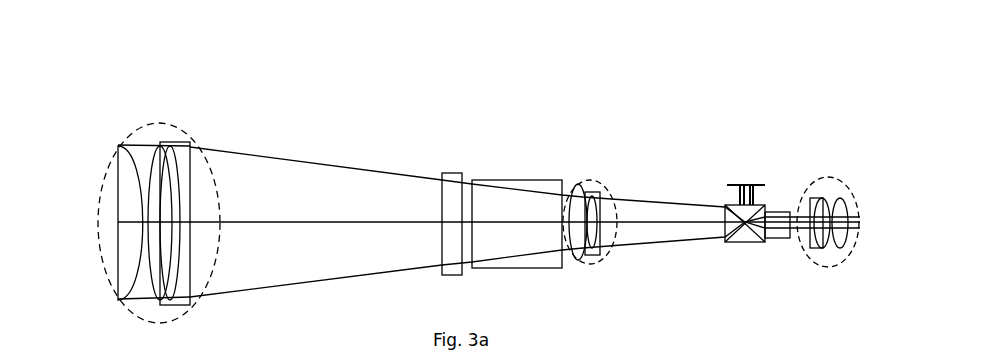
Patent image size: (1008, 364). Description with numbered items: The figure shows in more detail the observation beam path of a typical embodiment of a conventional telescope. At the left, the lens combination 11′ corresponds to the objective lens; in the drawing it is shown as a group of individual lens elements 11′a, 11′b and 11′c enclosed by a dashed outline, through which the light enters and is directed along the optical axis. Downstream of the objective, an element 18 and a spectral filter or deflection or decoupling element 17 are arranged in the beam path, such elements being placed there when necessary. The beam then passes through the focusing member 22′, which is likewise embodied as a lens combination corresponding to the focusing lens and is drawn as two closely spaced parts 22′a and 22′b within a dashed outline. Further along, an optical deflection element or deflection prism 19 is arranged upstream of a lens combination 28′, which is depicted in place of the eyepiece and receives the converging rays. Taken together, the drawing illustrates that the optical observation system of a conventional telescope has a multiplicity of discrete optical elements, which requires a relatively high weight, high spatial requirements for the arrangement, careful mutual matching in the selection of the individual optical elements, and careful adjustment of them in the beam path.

The lens combination 11′ is at (204, 127).
The first lens of objective group 11′a is at (127, 145).
The second lens of objective group 11′b is at (159, 146).
The third lens of objective group 11′c is at (177, 143).
The optical plate / filter 18 is at (457, 173).
The spectral filter or deflection or decoupling element 17 is at (537, 180).
The focusing member 22′ is at (606, 178).
The lens of intermediate group 22′a is at (579, 184).
The element of intermediate group 22′b is at (595, 192).
The optical deflection element or deflection prism 19 is at (741, 245).
The lens combination 28′ is at (811, 179).